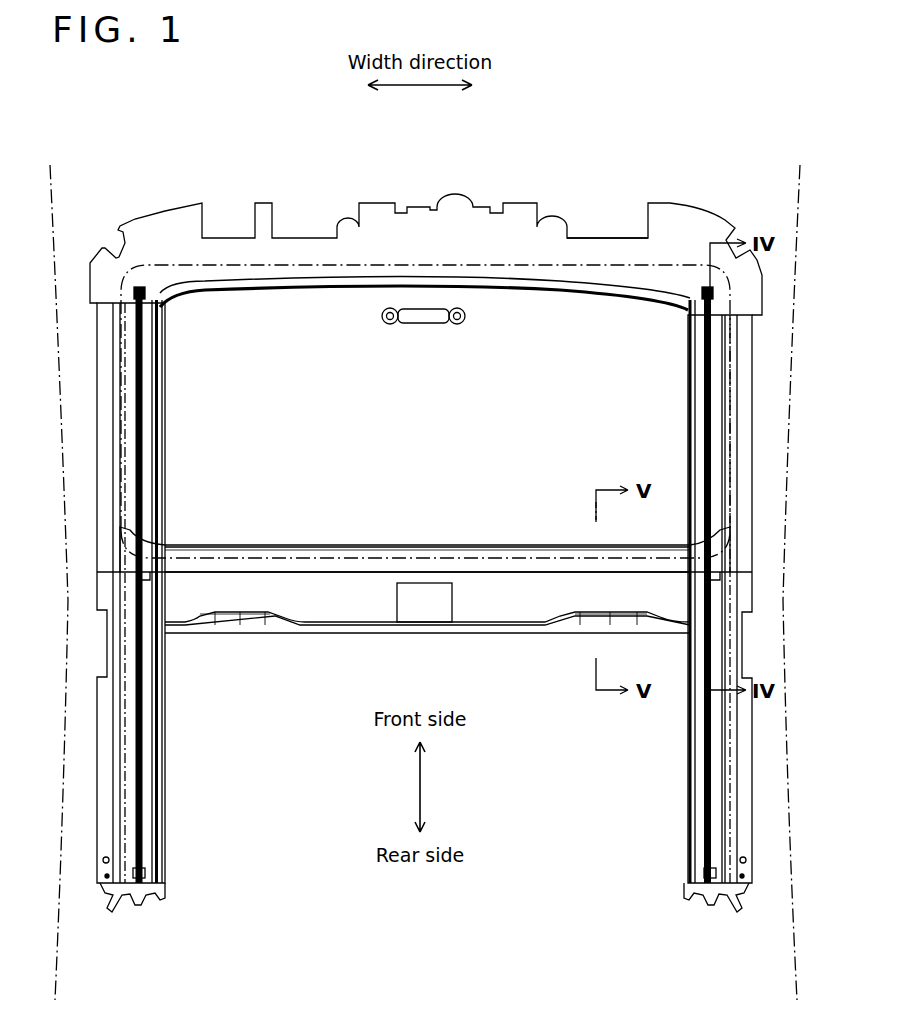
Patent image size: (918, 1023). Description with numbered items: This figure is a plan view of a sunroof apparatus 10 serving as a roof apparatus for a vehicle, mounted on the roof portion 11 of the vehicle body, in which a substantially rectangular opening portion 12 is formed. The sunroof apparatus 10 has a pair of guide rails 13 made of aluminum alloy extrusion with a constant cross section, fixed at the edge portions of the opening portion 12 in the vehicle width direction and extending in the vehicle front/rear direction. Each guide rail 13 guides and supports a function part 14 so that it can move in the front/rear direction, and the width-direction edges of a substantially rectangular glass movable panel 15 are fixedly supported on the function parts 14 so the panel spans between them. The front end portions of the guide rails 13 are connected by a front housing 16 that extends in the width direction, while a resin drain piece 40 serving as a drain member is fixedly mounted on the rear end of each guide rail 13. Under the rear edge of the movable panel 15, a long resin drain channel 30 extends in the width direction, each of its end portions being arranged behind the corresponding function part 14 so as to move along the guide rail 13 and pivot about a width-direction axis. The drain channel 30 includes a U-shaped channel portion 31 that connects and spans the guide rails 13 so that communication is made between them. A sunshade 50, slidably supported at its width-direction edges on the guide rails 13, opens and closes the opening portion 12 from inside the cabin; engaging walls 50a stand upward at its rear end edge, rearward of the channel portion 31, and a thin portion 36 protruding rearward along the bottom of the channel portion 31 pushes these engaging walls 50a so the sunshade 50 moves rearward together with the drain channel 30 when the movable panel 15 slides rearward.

The sunroof apparatus 10 is at (599, 159).
The roof portion 11 is at (786, 250).
The opening portion 12 is at (237, 288).
The guide rail 13 is at (148, 844).
The function part 14 is at (155, 421).
The movable panel 15 is at (400, 264).
The front housing 16 is at (598, 240).
The drain channel 30 is at (339, 546).
The channel portion 31 is at (284, 550).
The thin portion 36 is at (598, 576).
The drain piece 40 is at (155, 903).
The sunshade 50 is at (478, 635).
The engaging wall 50a is at (252, 632).